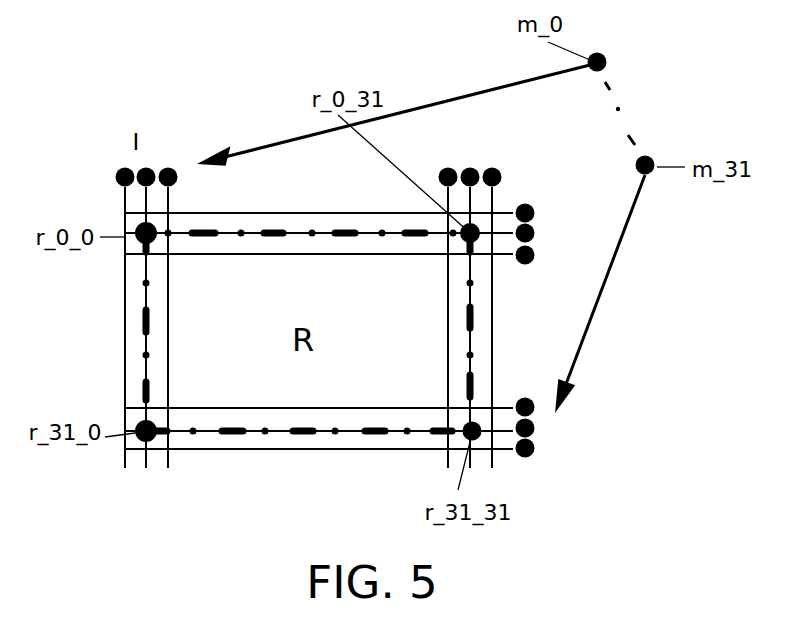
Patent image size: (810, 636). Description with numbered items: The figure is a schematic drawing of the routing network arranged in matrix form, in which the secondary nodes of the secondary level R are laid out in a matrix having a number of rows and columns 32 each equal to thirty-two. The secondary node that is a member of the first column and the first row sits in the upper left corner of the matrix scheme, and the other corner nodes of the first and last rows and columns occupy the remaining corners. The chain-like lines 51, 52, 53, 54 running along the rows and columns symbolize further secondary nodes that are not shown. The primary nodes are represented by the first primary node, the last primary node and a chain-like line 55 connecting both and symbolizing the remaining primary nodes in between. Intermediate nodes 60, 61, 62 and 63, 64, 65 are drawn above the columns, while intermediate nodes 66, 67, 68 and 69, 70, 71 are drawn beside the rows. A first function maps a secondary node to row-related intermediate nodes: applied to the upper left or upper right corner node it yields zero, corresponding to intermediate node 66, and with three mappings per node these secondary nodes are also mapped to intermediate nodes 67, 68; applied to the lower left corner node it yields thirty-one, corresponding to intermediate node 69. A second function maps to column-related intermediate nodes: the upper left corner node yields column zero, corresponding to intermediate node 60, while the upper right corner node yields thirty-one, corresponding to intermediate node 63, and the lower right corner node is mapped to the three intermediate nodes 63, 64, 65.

The number of rows and columns 32 is at (473, 207).
The chain-like line 51 is at (284, 228).
The chain-like line 52 is at (146, 332).
The chain-like line 53 is at (230, 438).
The chain-like line 54 is at (482, 345).
The chain-like line 55 is at (634, 140).
The intermediate node 60 is at (118, 168).
The intermediate node 61 is at (147, 167).
The intermediate node 62 is at (168, 167).
The intermediate node 63 is at (447, 167).
The intermediate node 64 is at (471, 167).
The intermediate node 65 is at (496, 168).
The intermediate node 66 is at (535, 210).
The intermediate node 67 is at (535, 233).
The intermediate node 68 is at (535, 258).
The intermediate node 69 is at (527, 398).
The intermediate node 70 is at (535, 427).
The intermediate node 71 is at (535, 452).